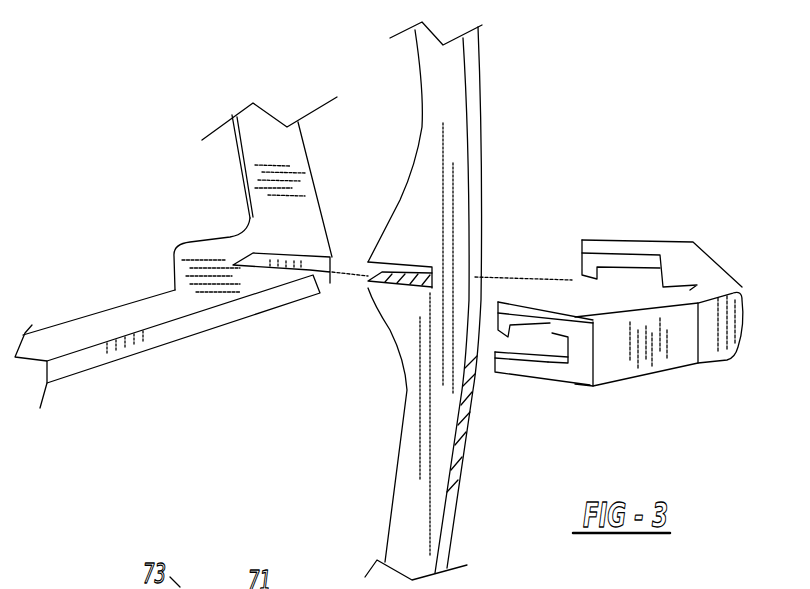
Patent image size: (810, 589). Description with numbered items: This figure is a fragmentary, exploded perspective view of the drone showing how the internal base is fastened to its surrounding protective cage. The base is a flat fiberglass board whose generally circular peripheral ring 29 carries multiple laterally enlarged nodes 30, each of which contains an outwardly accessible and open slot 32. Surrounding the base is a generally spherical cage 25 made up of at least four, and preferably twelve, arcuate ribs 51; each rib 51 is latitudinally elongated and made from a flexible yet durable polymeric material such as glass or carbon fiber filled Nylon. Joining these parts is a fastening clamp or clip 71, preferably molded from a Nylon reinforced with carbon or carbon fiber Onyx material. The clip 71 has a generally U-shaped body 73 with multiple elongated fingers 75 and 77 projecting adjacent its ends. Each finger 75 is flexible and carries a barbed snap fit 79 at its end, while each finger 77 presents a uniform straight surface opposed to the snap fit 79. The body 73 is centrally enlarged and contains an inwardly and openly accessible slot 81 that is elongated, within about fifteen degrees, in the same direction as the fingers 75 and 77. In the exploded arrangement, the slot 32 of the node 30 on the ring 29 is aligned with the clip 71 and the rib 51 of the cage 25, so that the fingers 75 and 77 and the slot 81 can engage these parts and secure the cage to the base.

The spherical cage 25 is at (477, 82).
The peripheral ring 29 is at (168, 339).
The node 30 is at (175, 253).
The slot 32 is at (317, 264).
The arcuate rib 51 is at (460, 182).
The fastening clip 71 is at (622, 368).
The U-shaped body 73 is at (617, 312).
The finger 75 is at (626, 242).
The finger 77 is at (513, 368).
The barbed snap fit 79 is at (552, 322).
The slot 81 is at (79, 578).